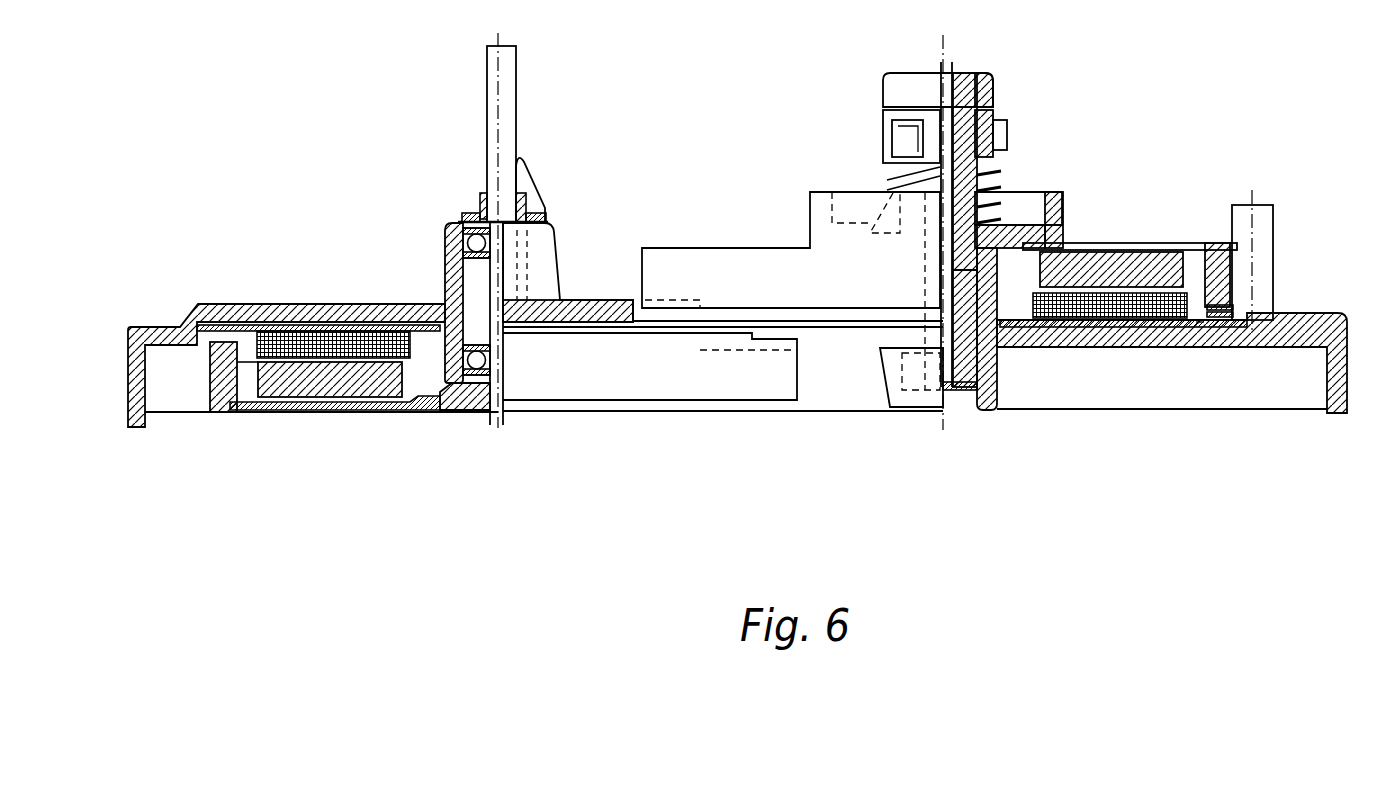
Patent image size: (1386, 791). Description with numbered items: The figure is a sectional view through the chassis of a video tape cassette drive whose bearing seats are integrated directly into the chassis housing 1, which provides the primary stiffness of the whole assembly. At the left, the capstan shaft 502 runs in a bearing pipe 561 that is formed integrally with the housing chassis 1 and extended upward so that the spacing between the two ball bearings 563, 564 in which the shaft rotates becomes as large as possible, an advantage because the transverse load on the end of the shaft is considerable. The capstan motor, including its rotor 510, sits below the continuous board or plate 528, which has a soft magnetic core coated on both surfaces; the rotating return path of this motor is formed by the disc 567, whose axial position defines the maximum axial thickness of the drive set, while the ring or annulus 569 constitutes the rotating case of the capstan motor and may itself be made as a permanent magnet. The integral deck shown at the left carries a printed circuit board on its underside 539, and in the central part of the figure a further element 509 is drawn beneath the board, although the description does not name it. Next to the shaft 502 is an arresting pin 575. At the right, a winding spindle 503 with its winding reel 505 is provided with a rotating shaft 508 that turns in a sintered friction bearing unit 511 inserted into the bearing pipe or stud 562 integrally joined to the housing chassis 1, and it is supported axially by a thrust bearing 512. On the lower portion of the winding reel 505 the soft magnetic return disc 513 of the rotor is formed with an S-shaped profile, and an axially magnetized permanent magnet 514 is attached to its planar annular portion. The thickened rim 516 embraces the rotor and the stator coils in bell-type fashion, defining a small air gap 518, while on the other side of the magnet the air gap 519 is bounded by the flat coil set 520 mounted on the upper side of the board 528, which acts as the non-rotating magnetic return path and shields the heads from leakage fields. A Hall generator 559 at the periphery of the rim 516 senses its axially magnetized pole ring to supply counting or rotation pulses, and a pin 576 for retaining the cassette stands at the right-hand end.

The chassis housing 1 is at (285, 312).
The capstan shaft 502 is at (507, 63).
The winding spindle 503 is at (993, 78).
The winding reel 505 is at (1050, 193).
The rotating shaft 508 is at (949, 72).
The circuit board 509 is at (693, 387).
The rotor 510 is at (697, 262).
The friction bearing unit 511 is at (965, 370).
The thrust bearing 512 is at (952, 390).
The soft magnetic return disc 513 is at (1093, 243).
The permanent magnet 514 is at (1152, 262).
The thickened rim 516 is at (1220, 270).
The air gap 518 is at (1237, 300).
The air gap 519 is at (1120, 322).
The flat coil set 520 is at (1162, 333).
The board or plate 528 is at (208, 325).
The underside 539 is at (203, 365).
The Hall generator 559 is at (1200, 322).
The bearing pipe 561 is at (453, 283).
The bearing pipe or stud 562 is at (997, 376).
The ball bearing 563 is at (440, 232).
The ball bearing 564 is at (470, 412).
The disc 567 is at (305, 412).
The ring or annulus 569 is at (228, 413).
The arresting pin 575 is at (538, 177).
The pin 576 is at (1257, 213).